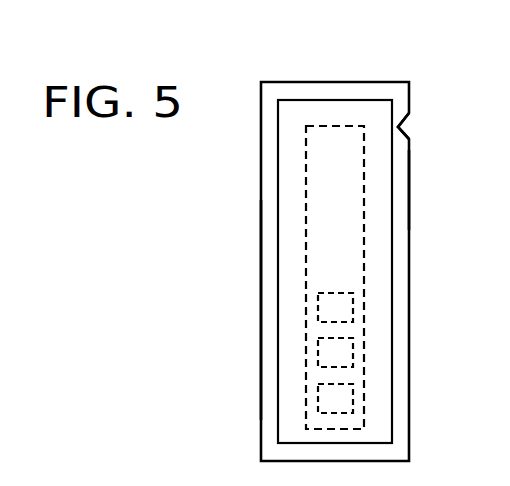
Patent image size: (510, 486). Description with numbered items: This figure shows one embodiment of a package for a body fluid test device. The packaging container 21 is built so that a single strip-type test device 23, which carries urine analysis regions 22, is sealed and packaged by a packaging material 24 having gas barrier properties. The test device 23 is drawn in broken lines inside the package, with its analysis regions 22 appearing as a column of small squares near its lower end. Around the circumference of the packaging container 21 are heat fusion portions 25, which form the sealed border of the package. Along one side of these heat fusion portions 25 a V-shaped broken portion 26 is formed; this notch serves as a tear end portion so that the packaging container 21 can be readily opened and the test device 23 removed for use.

The packaging container 21 is at (299, 81).
The urine analysis regions 22 is at (355, 352).
The strip-type test device 23 is at (306, 189).
The packaging material 24 is at (346, 108).
The heat fusion portions 25 is at (397, 188).
The V-shaped broken portion 26 is at (409, 127).